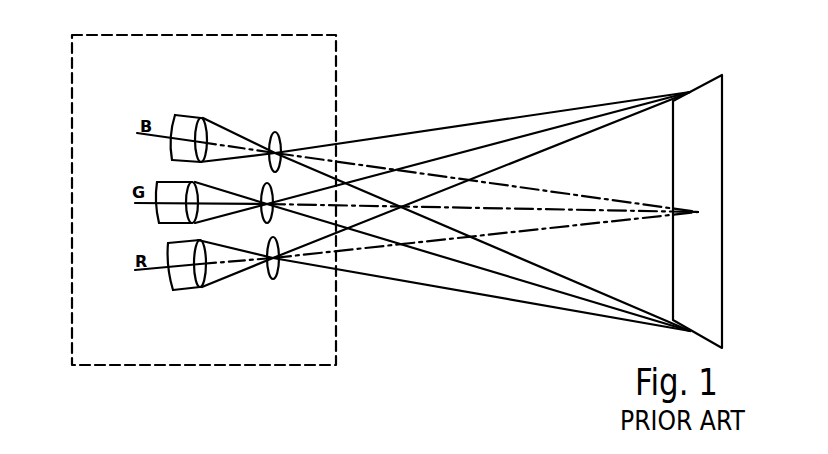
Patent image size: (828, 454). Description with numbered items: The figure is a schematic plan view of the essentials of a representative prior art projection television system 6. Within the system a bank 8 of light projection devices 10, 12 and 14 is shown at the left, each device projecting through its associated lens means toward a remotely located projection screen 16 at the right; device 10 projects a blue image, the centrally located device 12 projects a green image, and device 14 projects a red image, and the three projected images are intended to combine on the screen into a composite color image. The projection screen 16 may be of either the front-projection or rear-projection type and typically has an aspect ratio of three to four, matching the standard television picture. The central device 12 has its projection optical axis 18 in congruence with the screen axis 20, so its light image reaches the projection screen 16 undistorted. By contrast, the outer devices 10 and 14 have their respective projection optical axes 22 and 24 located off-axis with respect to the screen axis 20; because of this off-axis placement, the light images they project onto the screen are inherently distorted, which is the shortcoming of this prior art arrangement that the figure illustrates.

The projection television system 6 is at (443, 90).
The bank of light projection devices 8 is at (72, 288).
The light projection device 10 is at (213, 117).
The light projection device 12 is at (170, 174).
The light projection device 14 is at (200, 292).
The projection screen 16 is at (722, 157).
The projection optical axis 18 is at (135, 203).
The screen axis 20 is at (440, 208).
The projection optical axis 22 is at (357, 162).
The projection optical axis 24 is at (350, 250).